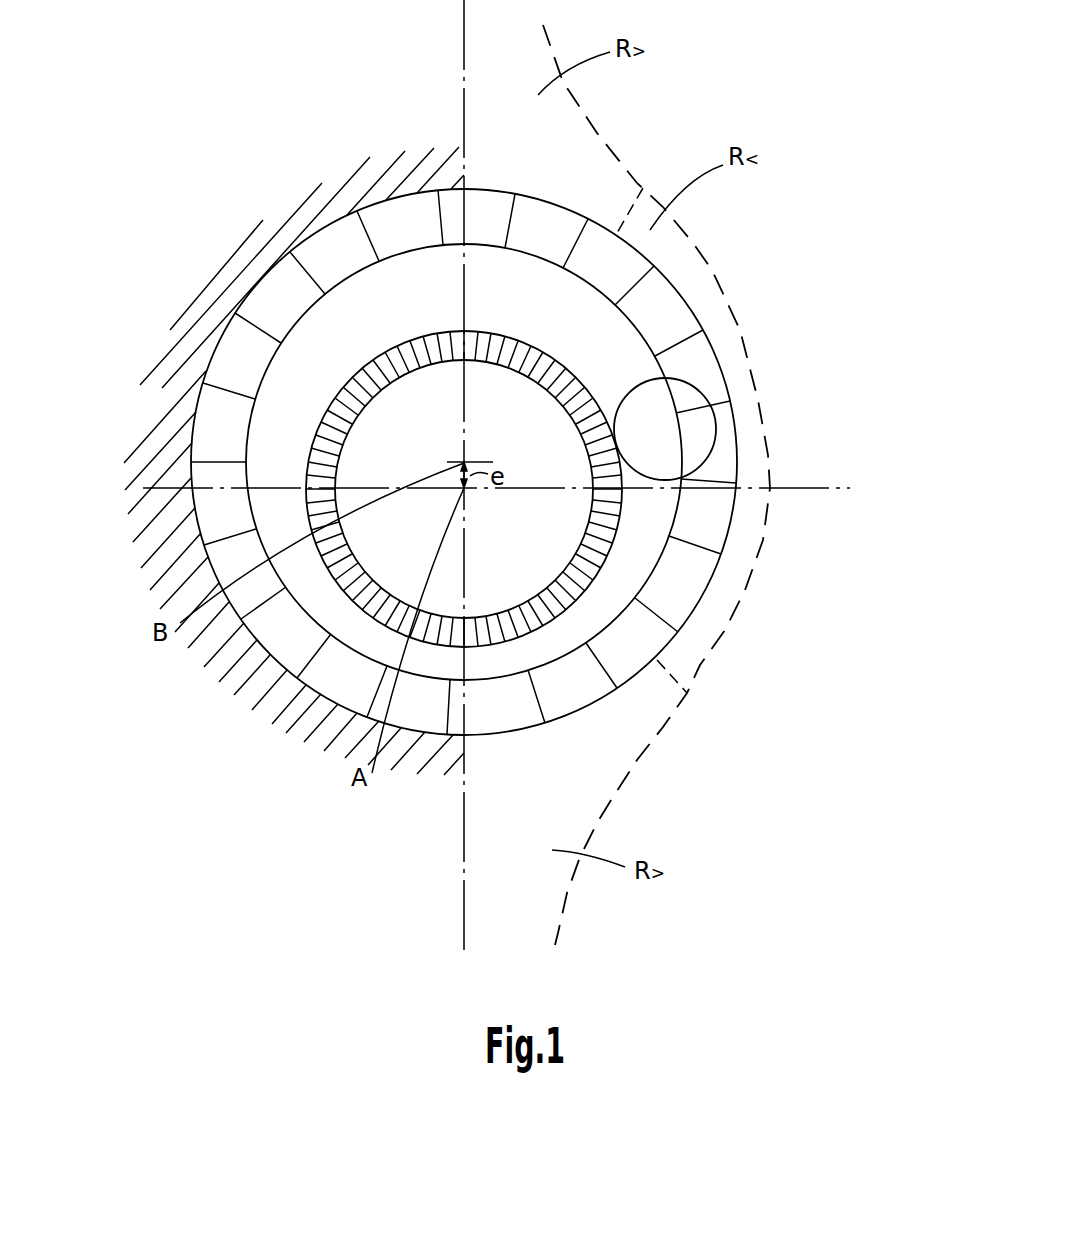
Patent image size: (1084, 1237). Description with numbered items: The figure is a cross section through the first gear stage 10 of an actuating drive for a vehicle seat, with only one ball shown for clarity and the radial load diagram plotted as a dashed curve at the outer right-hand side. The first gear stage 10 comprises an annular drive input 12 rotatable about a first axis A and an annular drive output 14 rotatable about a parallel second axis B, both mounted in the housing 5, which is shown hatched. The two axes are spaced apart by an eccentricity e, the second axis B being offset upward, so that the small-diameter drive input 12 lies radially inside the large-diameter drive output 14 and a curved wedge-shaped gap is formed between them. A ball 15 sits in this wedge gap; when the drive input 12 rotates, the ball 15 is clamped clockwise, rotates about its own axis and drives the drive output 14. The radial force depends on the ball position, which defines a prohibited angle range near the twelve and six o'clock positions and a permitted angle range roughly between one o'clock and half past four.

The first gear stage 10 is at (268, 197).
The housing 5 is at (286, 749).
The drive output 14 is at (660, 305).
The ball 15 is at (650, 415).
The drive input 12 is at (605, 527).